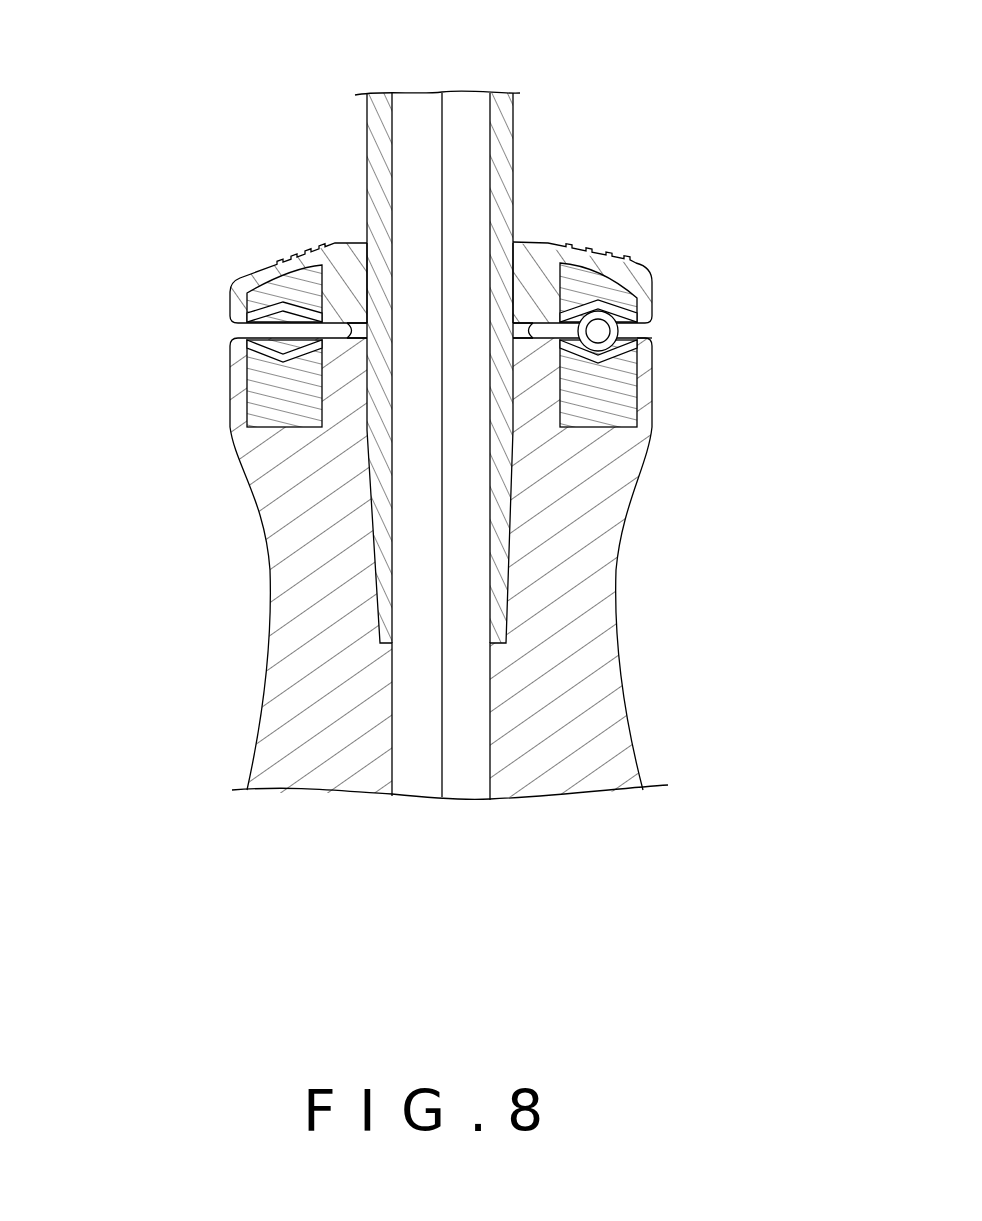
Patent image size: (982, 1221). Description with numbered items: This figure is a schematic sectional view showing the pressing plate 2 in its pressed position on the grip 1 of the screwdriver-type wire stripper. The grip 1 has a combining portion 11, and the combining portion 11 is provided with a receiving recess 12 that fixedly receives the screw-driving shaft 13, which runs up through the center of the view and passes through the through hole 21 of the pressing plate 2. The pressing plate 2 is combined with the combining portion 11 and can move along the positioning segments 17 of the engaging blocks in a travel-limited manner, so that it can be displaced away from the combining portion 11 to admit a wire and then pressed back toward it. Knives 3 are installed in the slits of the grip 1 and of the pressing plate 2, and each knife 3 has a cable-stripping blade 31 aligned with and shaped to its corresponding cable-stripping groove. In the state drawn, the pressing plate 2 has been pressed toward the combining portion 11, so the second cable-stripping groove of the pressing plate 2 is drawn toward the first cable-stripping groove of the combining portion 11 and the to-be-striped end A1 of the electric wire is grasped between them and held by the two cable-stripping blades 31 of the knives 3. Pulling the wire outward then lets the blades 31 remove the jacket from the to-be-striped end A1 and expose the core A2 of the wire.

The grip 1 is at (603, 643).
The combining portion 11 is at (622, 380).
The receiving recess 12 is at (368, 452).
The screw-driving shaft 13 is at (503, 155).
The positioning segment 17 is at (352, 305).
The pressing plate 2 is at (565, 242).
The through hole 21 is at (357, 325).
The knife 3 is at (268, 272).
The cable-stripping blade 31 is at (270, 327).
The to-be-striped end A1 is at (640, 316).
The core A2 is at (650, 343).